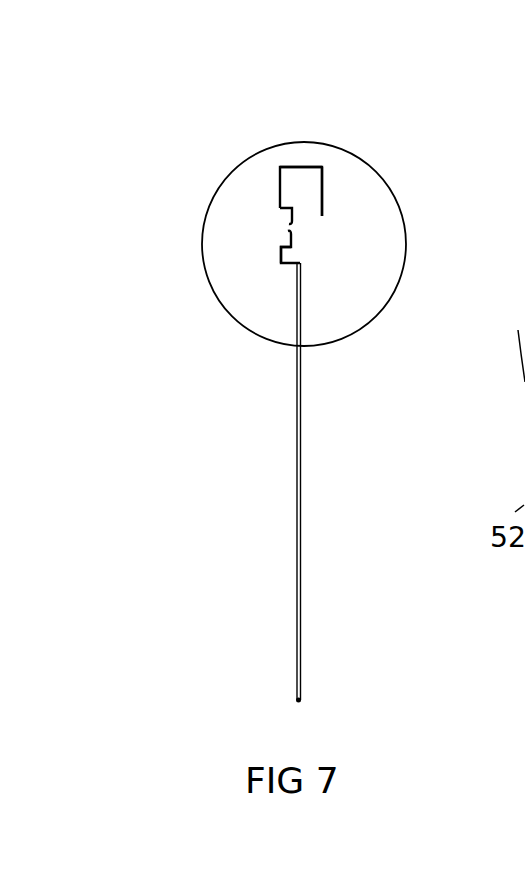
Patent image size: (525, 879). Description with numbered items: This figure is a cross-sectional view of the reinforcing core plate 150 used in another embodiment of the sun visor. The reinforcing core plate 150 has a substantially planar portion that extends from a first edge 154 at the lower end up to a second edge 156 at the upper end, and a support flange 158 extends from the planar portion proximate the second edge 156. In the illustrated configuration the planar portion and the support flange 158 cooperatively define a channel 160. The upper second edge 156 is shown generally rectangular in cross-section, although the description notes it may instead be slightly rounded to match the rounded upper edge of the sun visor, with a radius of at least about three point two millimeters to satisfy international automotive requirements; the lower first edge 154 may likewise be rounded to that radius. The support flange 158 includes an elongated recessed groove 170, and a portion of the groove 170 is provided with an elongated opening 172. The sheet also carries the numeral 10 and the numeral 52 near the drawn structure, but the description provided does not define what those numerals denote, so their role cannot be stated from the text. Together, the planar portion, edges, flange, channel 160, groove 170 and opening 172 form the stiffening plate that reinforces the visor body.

The retaining clip assembly 10 is at (365, 158).
The wire stem 52 is at (302, 463).
The reinforcing core plate 150 is at (262, 130).
The first edge 154 is at (298, 704).
The second edge 156 is at (301, 167).
The support flange 158 is at (325, 193).
The channel 160 is at (301, 190).
The elongated recessed groove 170 is at (288, 240).
The elongated opening 172 is at (296, 228).